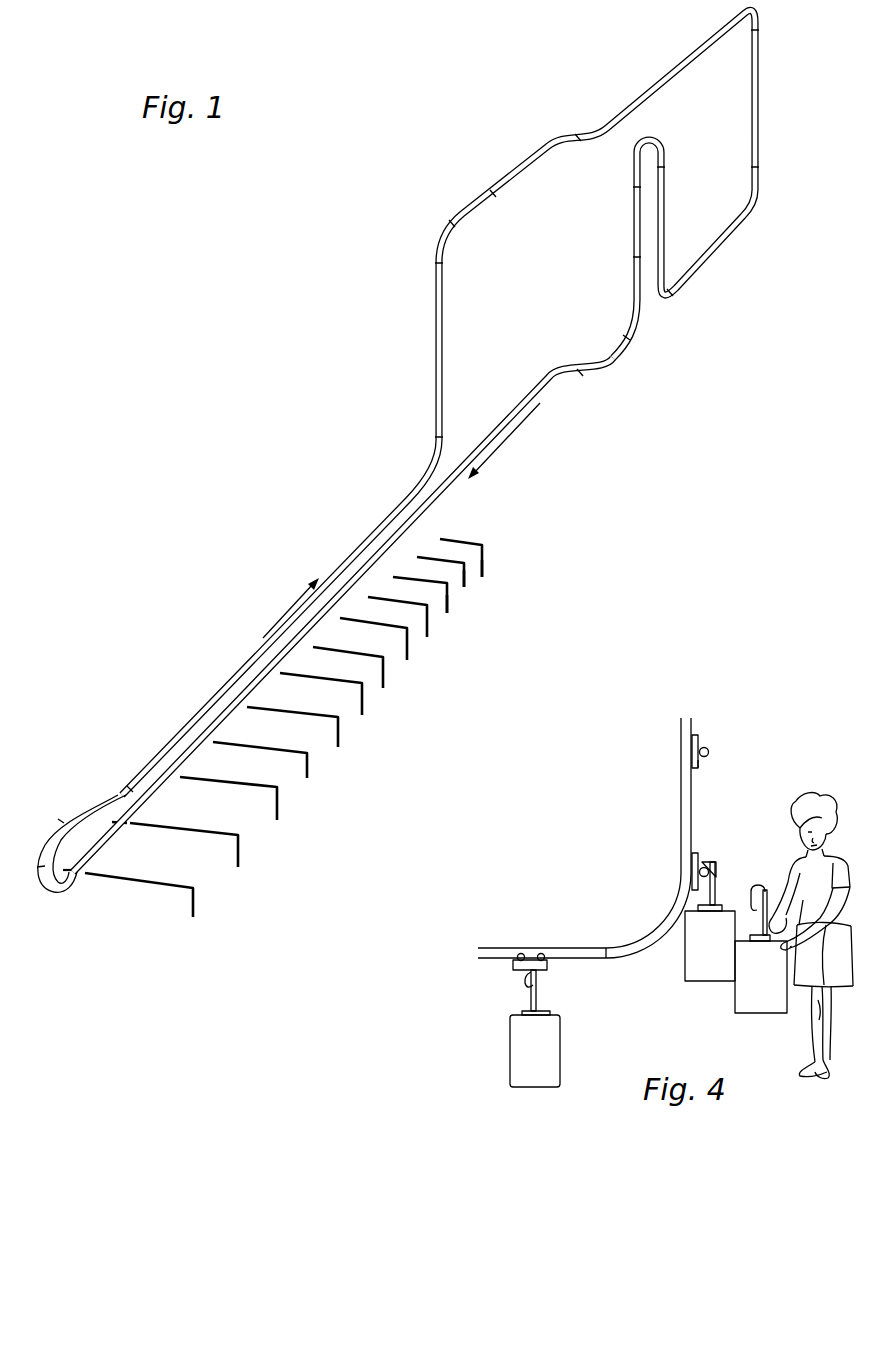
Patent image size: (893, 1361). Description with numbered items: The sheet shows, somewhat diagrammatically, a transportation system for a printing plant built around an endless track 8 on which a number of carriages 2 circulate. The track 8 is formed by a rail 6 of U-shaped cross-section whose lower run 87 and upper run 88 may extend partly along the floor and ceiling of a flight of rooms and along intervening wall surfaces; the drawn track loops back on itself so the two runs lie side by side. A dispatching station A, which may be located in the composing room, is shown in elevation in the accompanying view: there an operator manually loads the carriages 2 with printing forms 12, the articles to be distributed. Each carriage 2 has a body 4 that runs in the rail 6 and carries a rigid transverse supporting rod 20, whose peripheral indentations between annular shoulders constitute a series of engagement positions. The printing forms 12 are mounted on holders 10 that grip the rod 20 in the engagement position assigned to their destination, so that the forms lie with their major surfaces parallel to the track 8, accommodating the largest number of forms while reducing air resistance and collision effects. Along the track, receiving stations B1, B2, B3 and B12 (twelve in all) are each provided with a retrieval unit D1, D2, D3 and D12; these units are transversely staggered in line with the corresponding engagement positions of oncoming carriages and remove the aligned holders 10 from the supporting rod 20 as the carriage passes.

In FIG. 4, the carriage 2 is at (702, 731).
In FIG. 4, the carriage body 4 is at (699, 768).
In FIG. 4, the rail 6 is at (681, 797).
In FIG. 1, the endless track 8 is at (398, 451).
In FIG. 4, the holder 10 is at (762, 886).
In FIG. 4, the printing form 12 is at (735, 1002).
In FIG. 4, the transverse supporting rod 20 is at (709, 752).
In FIG. 1, the lower run 87 is at (497, 431).
In FIG. 1, the upper run 88 is at (494, 192).
In FIG. 1, the dispatching station A is at (735, 281).
In FIG. 4, the dispatching station A is at (653, 1026).
In FIG. 1, the retrieval unit D1 is at (456, 545).
In FIG. 1, the retrieval unit D2 is at (432, 562).
In FIG. 1, the retrieval unit D3 is at (412, 586).
In FIG. 1, the retrieval unit D12 is at (150, 847).
In FIG. 1, the receiving station B1 is at (495, 574).
In FIG. 1, the receiving station B2 is at (476, 591).
In FIG. 1, the receiving station B3 is at (458, 617).
In FIG. 1, the receiving station B12 is at (157, 907).